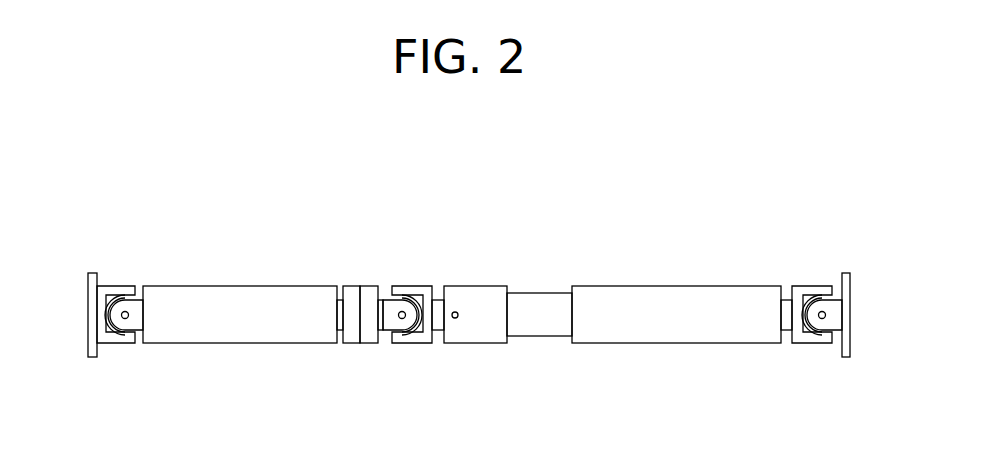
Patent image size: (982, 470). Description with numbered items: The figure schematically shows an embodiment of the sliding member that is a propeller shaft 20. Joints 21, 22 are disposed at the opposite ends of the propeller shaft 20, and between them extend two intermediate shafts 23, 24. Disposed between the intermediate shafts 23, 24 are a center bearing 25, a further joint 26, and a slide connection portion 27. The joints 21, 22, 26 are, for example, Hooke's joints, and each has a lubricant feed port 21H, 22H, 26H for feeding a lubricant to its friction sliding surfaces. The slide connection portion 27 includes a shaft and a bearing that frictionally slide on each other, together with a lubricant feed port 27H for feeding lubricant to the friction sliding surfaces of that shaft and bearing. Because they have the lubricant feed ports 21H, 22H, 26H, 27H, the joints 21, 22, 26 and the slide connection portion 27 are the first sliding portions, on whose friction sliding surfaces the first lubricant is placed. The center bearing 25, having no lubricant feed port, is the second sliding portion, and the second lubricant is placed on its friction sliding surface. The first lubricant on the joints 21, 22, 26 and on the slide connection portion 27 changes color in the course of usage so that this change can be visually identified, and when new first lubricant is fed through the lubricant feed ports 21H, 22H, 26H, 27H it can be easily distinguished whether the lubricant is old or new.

The propeller shaft 20 is at (499, 190).
The joint 21 is at (115, 345).
The lubricant feed port 21H is at (122, 301).
The joint 22 is at (810, 345).
The lubricant feed port 22H is at (813, 302).
The intermediate shaft 23 is at (238, 344).
The intermediate shaft 24 is at (680, 344).
The center bearing 25 is at (360, 344).
The joint 26 is at (420, 345).
The lubricant feed port 26H is at (421, 303).
The slide connection portion 27 is at (477, 345).
The lubricant feed port 27H is at (457, 311).